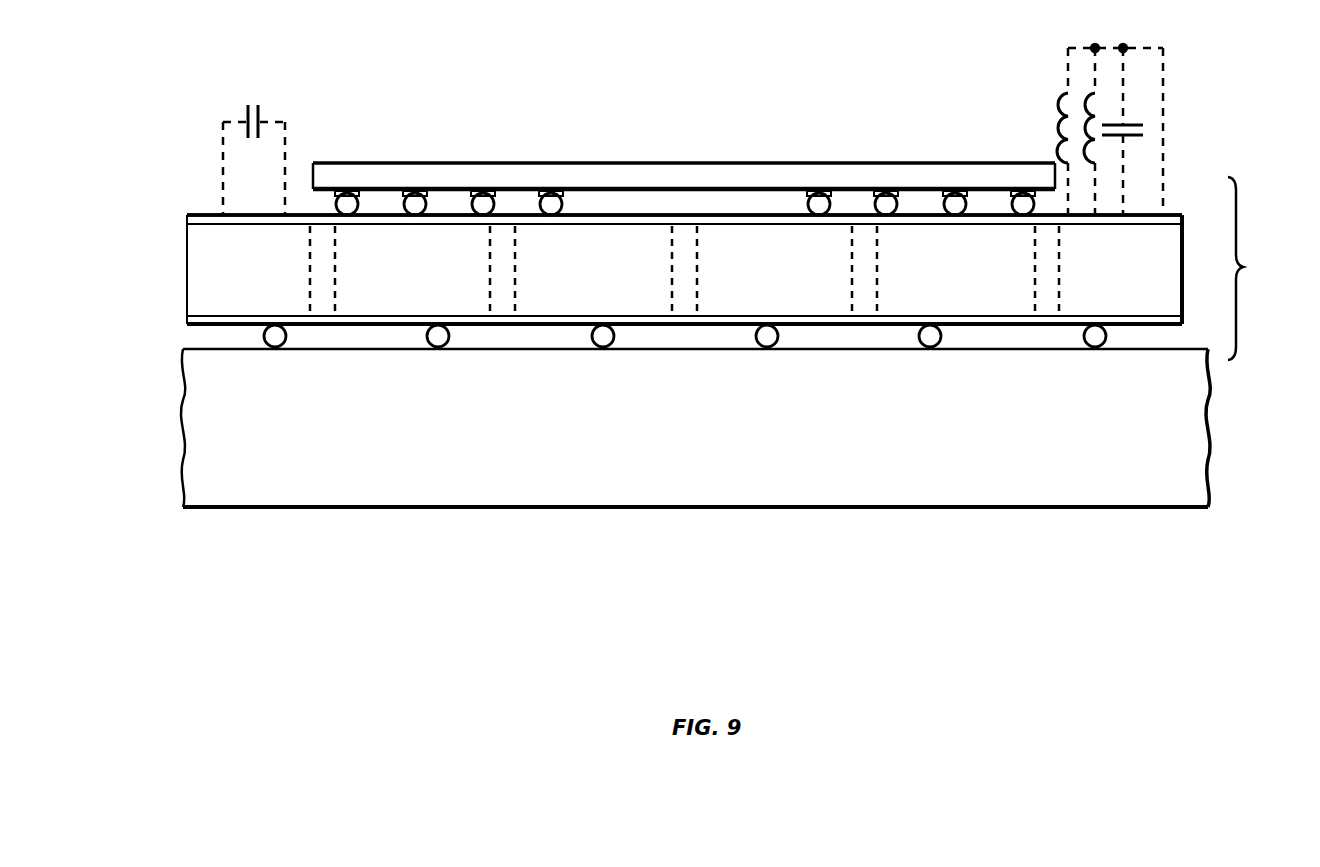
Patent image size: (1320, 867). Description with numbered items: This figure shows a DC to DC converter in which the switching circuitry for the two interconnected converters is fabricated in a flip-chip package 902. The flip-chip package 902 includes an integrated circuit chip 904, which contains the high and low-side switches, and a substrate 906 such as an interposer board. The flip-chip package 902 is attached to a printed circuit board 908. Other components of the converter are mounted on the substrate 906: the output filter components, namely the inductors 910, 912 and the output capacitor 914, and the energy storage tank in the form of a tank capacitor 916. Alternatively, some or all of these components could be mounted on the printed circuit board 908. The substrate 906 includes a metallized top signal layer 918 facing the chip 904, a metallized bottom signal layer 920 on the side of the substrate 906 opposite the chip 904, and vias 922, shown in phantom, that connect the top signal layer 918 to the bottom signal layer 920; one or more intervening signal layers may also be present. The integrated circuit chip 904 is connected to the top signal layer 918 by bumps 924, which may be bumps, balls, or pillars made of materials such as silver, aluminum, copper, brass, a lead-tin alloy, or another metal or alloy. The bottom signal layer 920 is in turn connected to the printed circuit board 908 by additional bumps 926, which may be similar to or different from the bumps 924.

The flip-chip package 902 is at (1260, 268).
The integrated circuit chip 904 is at (965, 163).
The substrate 906 is at (1192, 262).
The printed circuit board 908 is at (1090, 511).
The inductor 910 is at (1062, 95).
The inductor 912 is at (1087, 95).
The output capacitor 914 is at (1138, 123).
The tank capacitor 916 is at (262, 110).
The top signal layer 918 is at (187, 215).
The bottom signal layer 920 is at (186, 322).
The vias 922 is at (335, 285).
The bumps 924 is at (790, 201).
The additional bumps 926 is at (300, 338).